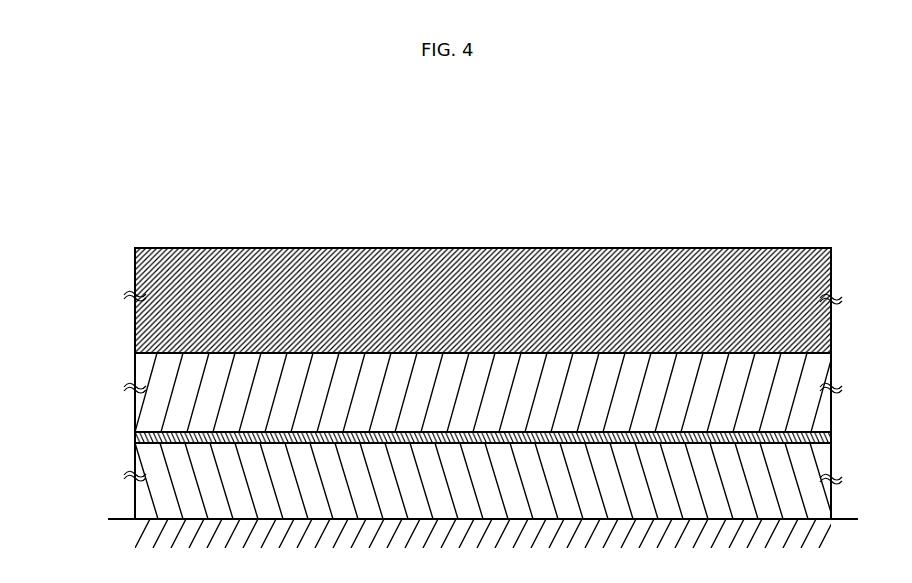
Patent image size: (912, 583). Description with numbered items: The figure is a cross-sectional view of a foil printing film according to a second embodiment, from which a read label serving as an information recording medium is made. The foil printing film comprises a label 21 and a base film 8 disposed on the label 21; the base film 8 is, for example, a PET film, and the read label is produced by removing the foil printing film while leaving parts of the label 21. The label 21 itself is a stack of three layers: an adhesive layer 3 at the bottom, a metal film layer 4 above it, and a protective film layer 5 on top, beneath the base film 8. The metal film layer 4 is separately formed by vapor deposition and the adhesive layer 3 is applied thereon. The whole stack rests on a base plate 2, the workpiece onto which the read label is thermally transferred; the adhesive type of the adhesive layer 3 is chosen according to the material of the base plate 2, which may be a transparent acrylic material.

The base plate 2 is at (160, 534).
The adhesive layer 3 is at (153, 461).
The metal film layer 4 is at (138, 436).
The protective film layer 5 is at (138, 410).
The base film 8 is at (158, 330).
The label 21 is at (75, 322).